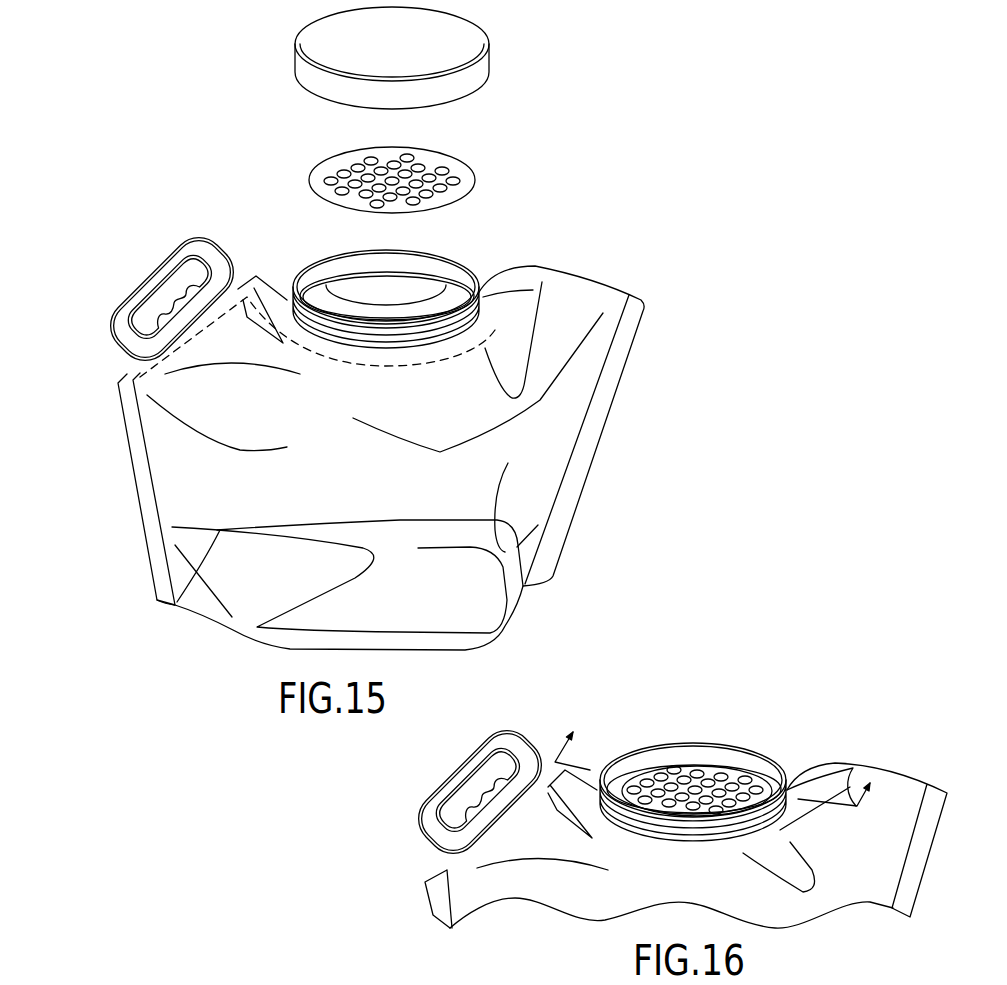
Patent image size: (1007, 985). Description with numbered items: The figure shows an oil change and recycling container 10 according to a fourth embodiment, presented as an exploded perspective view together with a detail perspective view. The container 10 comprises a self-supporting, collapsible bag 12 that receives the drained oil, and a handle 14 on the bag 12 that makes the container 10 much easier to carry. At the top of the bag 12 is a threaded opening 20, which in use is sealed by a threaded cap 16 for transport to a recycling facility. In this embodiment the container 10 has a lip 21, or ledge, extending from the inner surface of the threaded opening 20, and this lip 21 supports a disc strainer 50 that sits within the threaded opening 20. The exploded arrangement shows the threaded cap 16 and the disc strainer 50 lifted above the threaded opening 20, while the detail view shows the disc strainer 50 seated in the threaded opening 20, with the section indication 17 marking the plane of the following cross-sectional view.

In FIG. 15, the oil change and recycling container 10 is at (598, 250).
In FIG. 16, the oil change and recycling container 10 is at (862, 725).
In FIG. 15, the self-supporting, collapsible bag 12 is at (140, 523).
In FIG. 16, the self-supporting, collapsible bag 12 is at (427, 902).
In FIG. 15, the handle 14 is at (137, 280).
In FIG. 16, the handle 14 is at (480, 792).
In FIG. 15, the threaded cap 16 is at (483, 70).
In FIG. 16, the section line 17 is at (724, 762).
In FIG. 15, the threaded opening 20 is at (452, 262).
In FIG. 16, the threaded opening 20 is at (676, 745).
In FIG. 15, the lip 21 is at (314, 288).
In FIG. 15, the disc strainer 50 is at (462, 168).
In FIG. 16, the disc strainer 50 is at (735, 775).